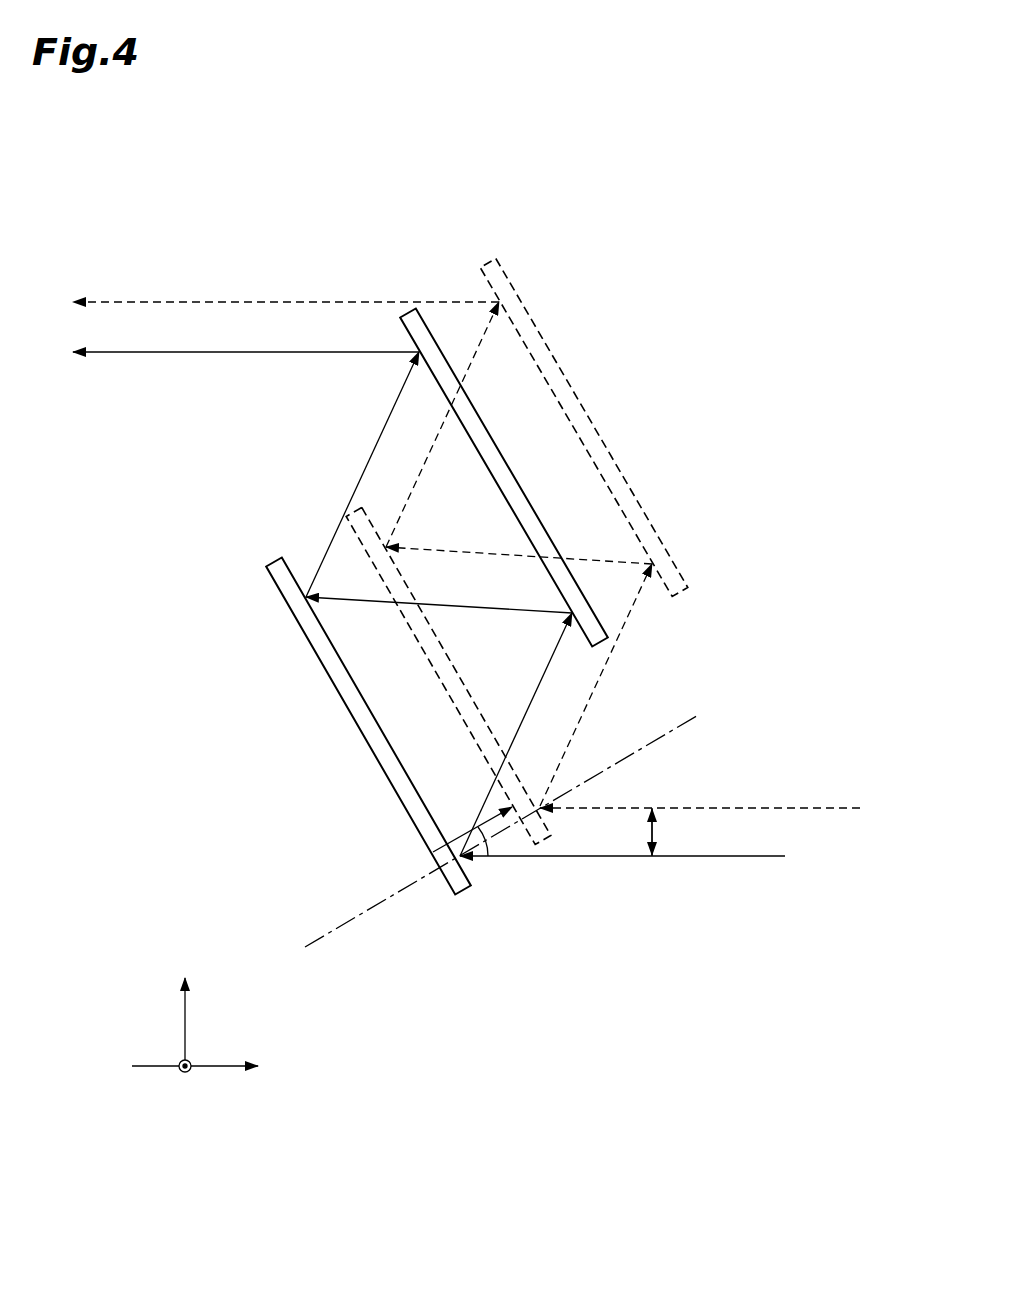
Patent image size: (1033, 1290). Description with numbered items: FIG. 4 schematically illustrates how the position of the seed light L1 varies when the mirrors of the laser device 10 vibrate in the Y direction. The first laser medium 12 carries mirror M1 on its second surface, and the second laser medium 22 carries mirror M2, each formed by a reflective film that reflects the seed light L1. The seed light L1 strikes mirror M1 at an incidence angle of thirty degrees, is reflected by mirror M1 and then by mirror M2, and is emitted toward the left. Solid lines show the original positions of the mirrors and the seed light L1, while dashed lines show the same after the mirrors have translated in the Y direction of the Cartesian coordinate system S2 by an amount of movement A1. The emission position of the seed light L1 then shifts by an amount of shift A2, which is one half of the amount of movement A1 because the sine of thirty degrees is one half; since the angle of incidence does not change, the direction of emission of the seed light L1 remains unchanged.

The optical device 10 is at (661, 234).
The first laser medium 12 is at (278, 557).
The second laser medium 22 is at (410, 310).
The seed light L1 is at (262, 300).
The amount of movement A1 is at (482, 858).
The amount of shift A2 is at (653, 830).
The Cartesian coordinate system S2 is at (155, 1067).